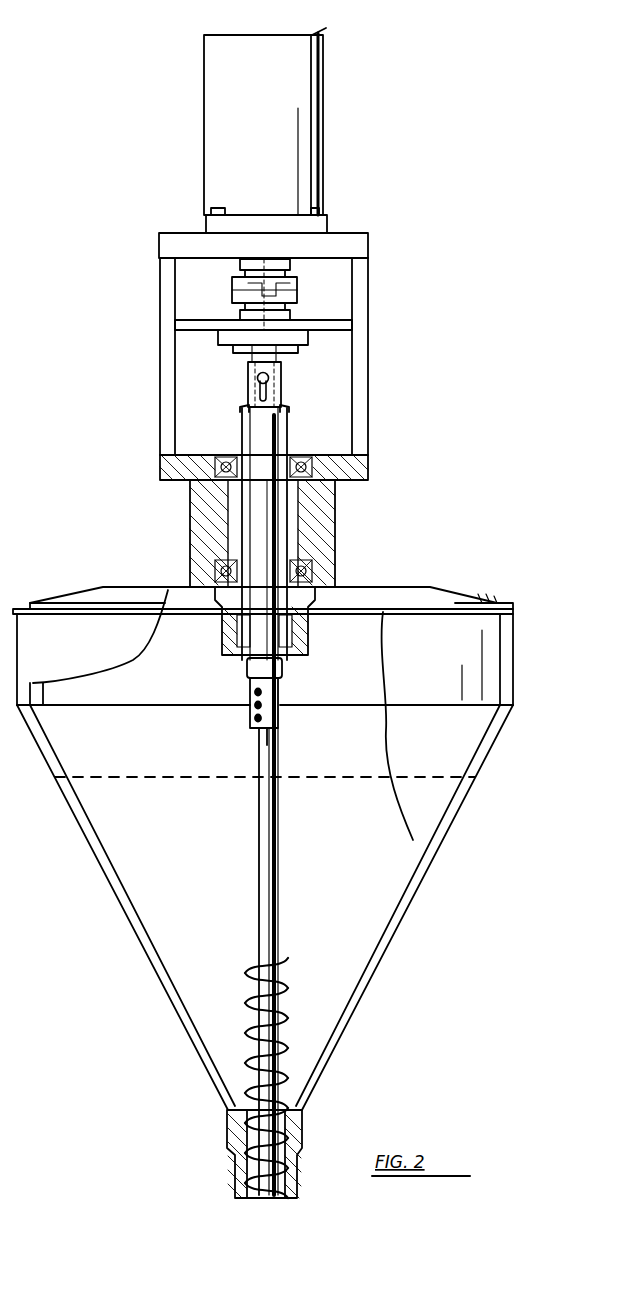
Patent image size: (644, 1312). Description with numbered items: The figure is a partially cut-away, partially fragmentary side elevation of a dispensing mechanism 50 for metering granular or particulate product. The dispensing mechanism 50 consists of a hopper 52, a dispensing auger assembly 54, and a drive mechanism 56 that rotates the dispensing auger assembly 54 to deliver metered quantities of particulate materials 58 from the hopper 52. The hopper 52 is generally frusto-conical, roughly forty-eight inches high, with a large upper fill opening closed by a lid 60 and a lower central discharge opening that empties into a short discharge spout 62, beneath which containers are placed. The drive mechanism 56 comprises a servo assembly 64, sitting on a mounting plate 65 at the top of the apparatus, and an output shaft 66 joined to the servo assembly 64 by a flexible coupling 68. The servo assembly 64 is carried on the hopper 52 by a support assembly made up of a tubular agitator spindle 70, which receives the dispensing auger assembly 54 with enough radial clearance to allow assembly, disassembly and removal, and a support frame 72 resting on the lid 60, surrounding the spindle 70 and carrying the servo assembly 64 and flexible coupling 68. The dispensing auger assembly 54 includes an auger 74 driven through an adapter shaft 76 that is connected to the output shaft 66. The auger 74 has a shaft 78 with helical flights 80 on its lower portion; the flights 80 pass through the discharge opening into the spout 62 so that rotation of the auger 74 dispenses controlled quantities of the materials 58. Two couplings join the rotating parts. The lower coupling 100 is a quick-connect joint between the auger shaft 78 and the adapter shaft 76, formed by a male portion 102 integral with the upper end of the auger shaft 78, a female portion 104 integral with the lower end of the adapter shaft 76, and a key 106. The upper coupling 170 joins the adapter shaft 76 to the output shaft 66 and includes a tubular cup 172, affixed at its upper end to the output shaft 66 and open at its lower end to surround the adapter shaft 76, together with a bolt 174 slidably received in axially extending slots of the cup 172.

The dispensing mechanism 50 is at (445, 528).
The hopper 52 is at (517, 656).
The dispensing auger assembly 54 is at (228, 632).
The drive mechanism 56 is at (336, 181).
The particulate materials 58 is at (382, 885).
The lid 60 is at (455, 600).
The discharge spout 62 is at (228, 1133).
The servo assembly 64 is at (318, 72).
The motor mounting plate 65 is at (213, 240).
The output shaft 66 is at (236, 352).
The flexible coupling 68 is at (297, 290).
The tubular agitator spindle 70 is at (289, 441).
The support frame 72 is at (360, 236).
The auger 74 is at (256, 753).
The adapter shaft 76 is at (244, 525).
The auger shaft 78 is at (276, 940).
The helical flights 80 is at (285, 1082).
The lower coupling 100 is at (287, 669).
The male portion 102 is at (270, 733).
The female portion 104 is at (250, 719).
The key 106 is at (247, 669).
The upper coupling 170 is at (246, 394).
The tubular cup 172 is at (282, 391).
The bolt 174 is at (257, 383).